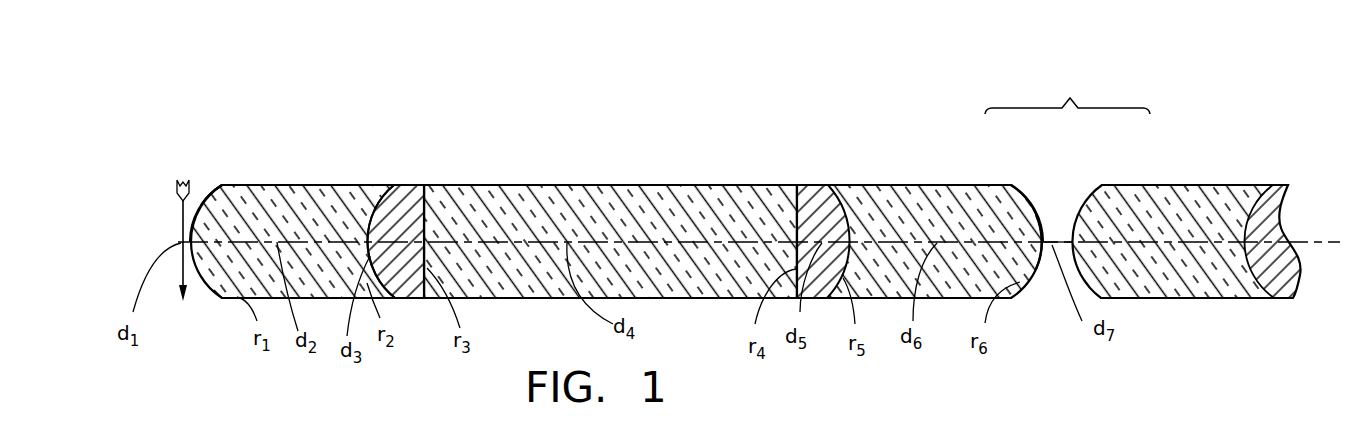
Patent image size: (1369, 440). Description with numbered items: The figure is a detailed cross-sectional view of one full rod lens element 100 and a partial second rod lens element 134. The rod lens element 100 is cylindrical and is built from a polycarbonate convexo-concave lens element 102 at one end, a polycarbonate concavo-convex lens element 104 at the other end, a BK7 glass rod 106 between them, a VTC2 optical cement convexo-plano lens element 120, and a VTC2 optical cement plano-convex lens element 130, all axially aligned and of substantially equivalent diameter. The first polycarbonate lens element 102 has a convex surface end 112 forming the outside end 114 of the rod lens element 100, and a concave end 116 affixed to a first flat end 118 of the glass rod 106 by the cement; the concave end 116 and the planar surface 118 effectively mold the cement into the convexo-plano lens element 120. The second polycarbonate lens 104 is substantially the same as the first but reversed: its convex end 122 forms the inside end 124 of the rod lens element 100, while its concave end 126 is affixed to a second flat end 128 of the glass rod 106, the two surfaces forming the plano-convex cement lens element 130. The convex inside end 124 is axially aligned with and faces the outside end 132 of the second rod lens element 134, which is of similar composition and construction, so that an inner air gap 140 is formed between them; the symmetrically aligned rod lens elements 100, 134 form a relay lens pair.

The rod lens element 100 is at (573, 103).
The polycarbonate convexo-concave lens element 102 is at (297, 184).
The polycarbonate concavo-convex lens element 104 is at (860, 197).
The BK7 glass rod 106 is at (593, 194).
The convex surface end 112 is at (197, 198).
The outside end 114 is at (212, 187).
The concave end 116 is at (411, 184).
The first flat end 118 is at (426, 231).
The VTC2 optical cement convexo-plano lens element 120 is at (424, 186).
The convex end 122 is at (1022, 197).
The inside end 124 is at (1040, 203).
The concave end 126 is at (823, 193).
The second flat end 128 is at (797, 203).
The VTC2 optical cement plano-convex lens element 130 is at (797, 185).
The outside end 132 is at (1086, 194).
The second rod lens element 134 is at (1227, 157).
The inner air gap 140 is at (1030, 298).